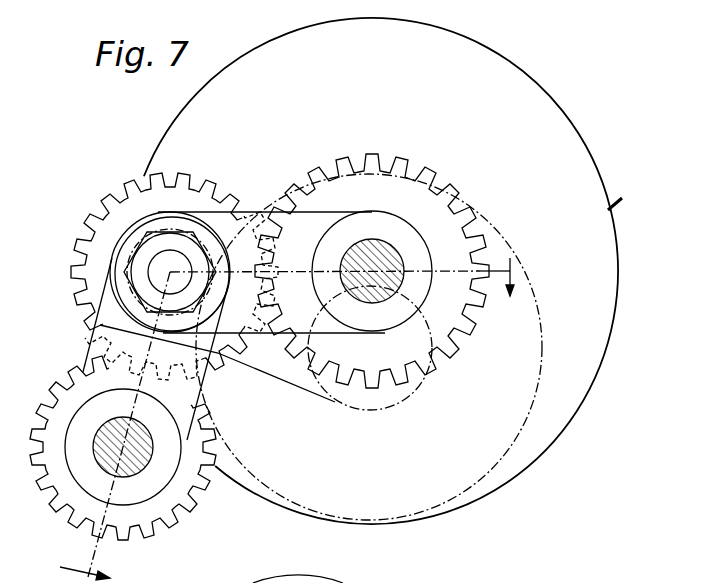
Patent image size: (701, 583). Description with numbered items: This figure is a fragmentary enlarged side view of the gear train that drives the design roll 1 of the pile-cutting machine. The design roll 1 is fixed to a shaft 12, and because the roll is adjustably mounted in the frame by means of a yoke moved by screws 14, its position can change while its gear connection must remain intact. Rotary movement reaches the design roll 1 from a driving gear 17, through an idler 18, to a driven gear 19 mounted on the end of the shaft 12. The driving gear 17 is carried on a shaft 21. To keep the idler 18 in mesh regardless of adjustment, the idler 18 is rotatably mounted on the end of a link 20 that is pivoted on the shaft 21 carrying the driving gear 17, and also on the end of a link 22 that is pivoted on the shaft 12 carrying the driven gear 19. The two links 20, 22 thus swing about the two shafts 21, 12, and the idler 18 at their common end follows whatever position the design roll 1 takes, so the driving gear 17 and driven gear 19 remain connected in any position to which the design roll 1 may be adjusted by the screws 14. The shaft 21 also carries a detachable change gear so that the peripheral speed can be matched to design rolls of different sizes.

The design roll 1 is at (578, 405).
The shaft 12 is at (390, 258).
The screws 14 is at (292, 420).
The driving gear 17 is at (177, 498).
The idler 18 is at (105, 232).
The driven gear 19 is at (440, 177).
The link 20 is at (90, 485).
The shaft 21 is at (110, 446).
The link 22 is at (250, 217).